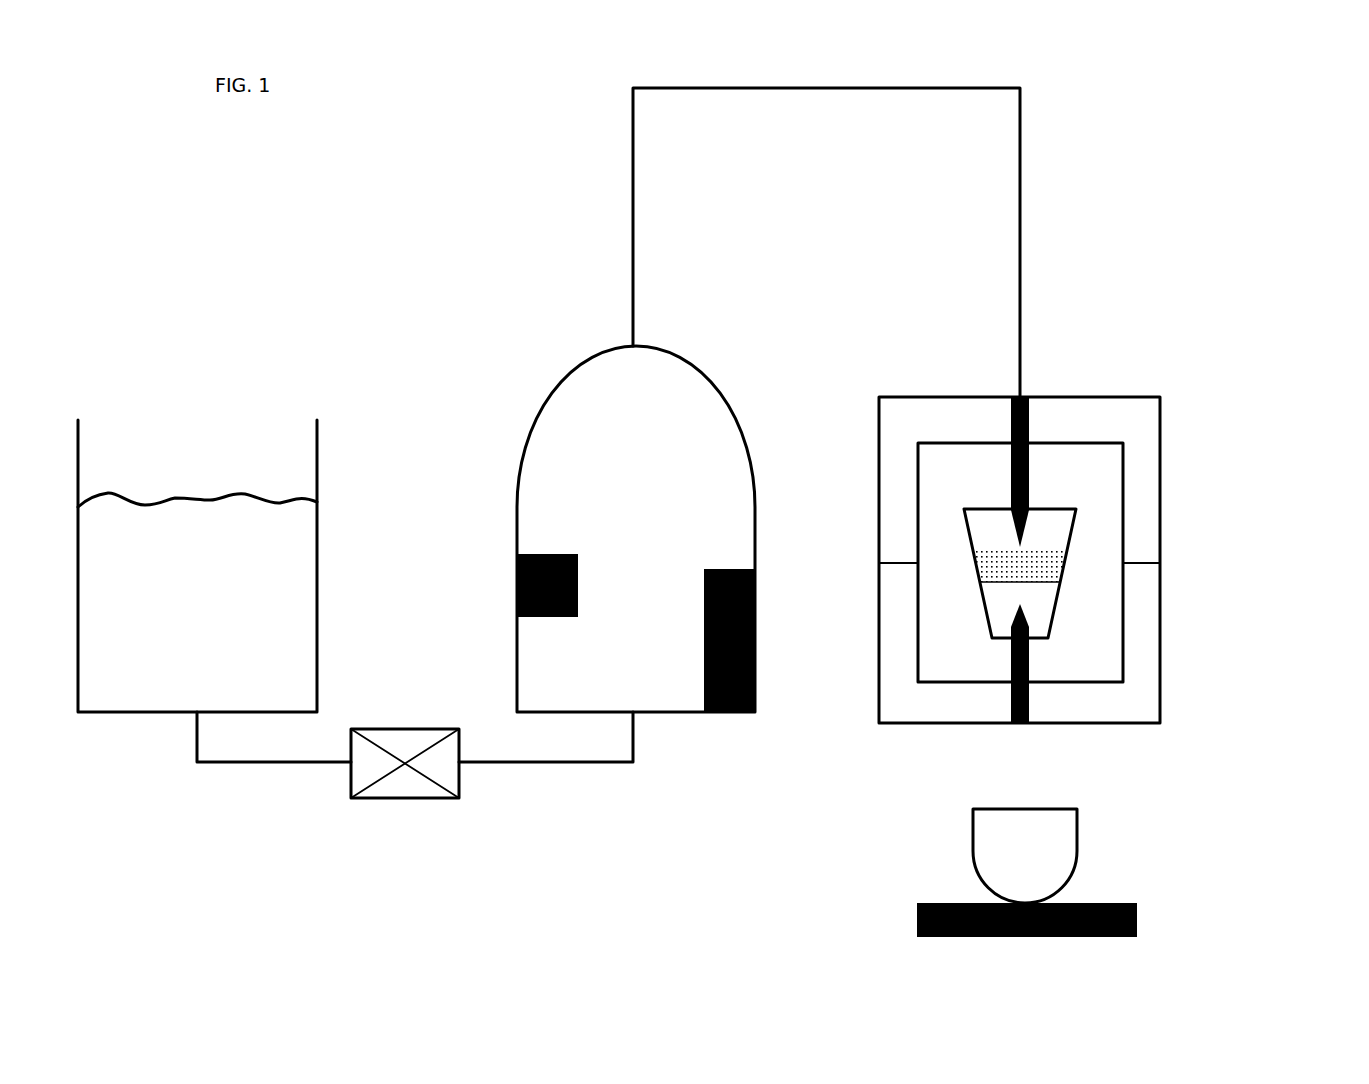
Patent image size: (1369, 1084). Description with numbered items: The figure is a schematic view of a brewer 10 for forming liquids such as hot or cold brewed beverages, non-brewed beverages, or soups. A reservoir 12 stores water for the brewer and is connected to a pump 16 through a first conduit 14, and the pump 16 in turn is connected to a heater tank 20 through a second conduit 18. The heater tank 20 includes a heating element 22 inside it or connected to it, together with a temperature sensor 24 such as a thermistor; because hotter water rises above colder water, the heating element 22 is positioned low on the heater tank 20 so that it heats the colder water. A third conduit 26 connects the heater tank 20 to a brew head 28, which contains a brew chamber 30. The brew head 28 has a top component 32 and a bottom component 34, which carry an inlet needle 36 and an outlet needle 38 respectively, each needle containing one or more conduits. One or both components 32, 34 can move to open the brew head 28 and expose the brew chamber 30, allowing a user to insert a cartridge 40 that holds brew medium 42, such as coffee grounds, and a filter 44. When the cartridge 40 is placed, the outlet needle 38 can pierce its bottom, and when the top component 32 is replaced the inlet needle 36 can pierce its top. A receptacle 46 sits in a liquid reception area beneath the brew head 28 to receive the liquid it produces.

The brewer 10 is at (248, 198).
The reservoir 12 is at (80, 452).
The first conduit 14 is at (222, 763).
The pump 16 is at (414, 797).
The second conduit 18 is at (615, 763).
The heater tank 20 is at (527, 412).
The heating element 22 is at (729, 712).
The temperature sensor 24 is at (517, 580).
The third conduit 26 is at (633, 130).
The brew head 28 is at (1126, 365).
The brew chamber 30 is at (920, 486).
The top component 32 is at (900, 472).
The bottom component 34 is at (900, 617).
The inlet needle 36 is at (1030, 472).
The outlet needle 38 is at (1030, 705).
The cartridge 40 is at (1070, 535).
The brew medium 42 is at (996, 548).
The filter 44 is at (1040, 583).
The receptacle 46 is at (1077, 849).